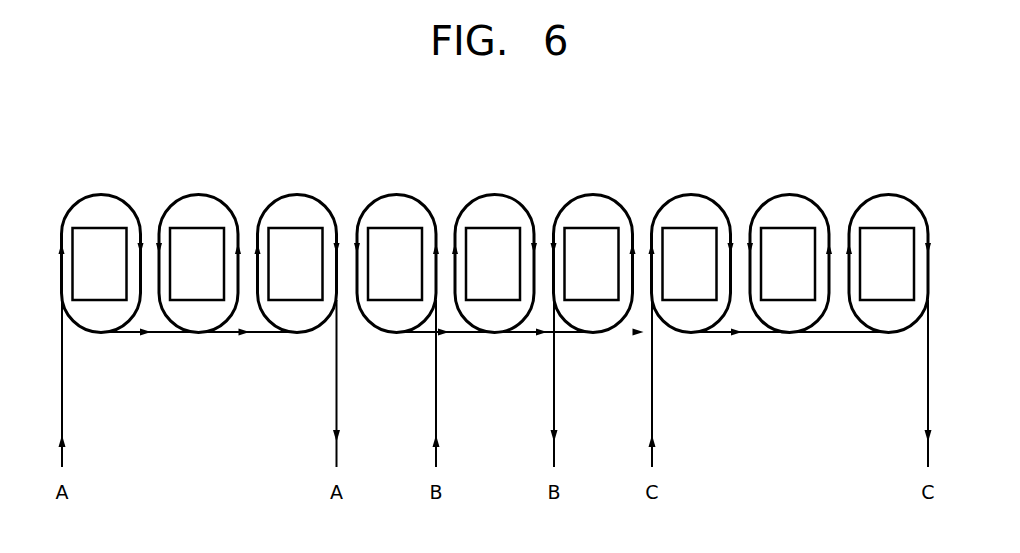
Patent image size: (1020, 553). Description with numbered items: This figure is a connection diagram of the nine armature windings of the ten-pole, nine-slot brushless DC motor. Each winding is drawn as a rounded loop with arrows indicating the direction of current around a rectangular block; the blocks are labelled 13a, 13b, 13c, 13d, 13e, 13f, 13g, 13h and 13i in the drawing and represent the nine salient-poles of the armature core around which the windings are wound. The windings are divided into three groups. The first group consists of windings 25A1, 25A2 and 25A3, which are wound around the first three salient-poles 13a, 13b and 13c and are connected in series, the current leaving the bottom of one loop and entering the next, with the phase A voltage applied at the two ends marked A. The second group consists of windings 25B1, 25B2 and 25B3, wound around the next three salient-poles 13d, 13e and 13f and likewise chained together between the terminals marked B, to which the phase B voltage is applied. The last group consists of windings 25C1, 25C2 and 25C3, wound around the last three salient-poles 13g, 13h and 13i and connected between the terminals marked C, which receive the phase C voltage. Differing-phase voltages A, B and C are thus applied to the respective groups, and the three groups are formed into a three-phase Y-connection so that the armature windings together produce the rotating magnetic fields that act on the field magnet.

The heat exchange unit 13a is at (100, 264).
The heat exchange unit 13b is at (197, 264).
The heat exchange unit 13c is at (296, 264).
The heat exchange unit 13d is at (395, 264).
The heat exchange unit 13e is at (493, 264).
The heat exchange unit 13f is at (592, 264).
The heat exchange unit 13g is at (690, 264).
The heat exchange unit 13h is at (788, 264).
The heat exchange unit 13i is at (887, 264).
The armature winding 25A1 is at (101, 195).
The armature winding 25A2 is at (198, 195).
The armature winding 25A3 is at (297, 195).
The armature winding 25B1 is at (396, 195).
The armature winding 25B2 is at (494, 195).
The armature winding 25B3 is at (593, 195).
The armature winding 25C1 is at (691, 195).
The armature winding 25C2 is at (790, 195).
The armature winding 25C3 is at (888, 195).